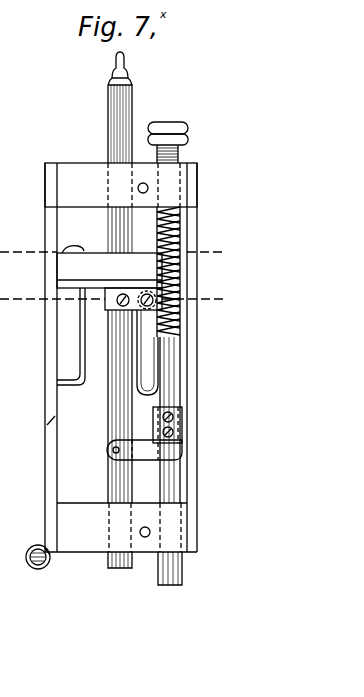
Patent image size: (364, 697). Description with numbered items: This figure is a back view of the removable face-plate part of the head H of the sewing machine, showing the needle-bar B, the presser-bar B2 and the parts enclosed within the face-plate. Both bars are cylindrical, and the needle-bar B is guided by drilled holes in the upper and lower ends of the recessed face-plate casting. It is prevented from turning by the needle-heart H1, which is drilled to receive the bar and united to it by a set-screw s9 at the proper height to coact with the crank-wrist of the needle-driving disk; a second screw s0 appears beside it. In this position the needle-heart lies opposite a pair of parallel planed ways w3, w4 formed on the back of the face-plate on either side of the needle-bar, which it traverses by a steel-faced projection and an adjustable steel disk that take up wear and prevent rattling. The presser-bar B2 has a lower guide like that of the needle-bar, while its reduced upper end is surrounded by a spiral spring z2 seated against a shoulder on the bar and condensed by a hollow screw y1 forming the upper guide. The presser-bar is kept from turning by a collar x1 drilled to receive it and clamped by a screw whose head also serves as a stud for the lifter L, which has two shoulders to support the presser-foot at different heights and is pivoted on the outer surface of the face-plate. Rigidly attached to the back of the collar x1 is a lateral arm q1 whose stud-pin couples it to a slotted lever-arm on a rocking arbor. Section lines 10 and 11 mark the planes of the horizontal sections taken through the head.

The needle-bar B is at (111, 310).
The hollow screw y1 is at (176, 142).
The head H is at (121, 357).
The needle-heart H1 is at (109, 267).
The set-screw s9 is at (127, 289).
The screw s0 is at (150, 286).
The section line 10 10 is at (225, 240).
The section line 11 11 is at (28, 289).
The spiral spring z2 is at (185, 316).
The planed way w3 is at (71, 336).
The planed way w4 is at (147, 352).
The presser-bar B2 is at (173, 378).
The collar x1 is at (183, 427).
The lateral arm q1 is at (144, 452).
The lifter L is at (32, 550).